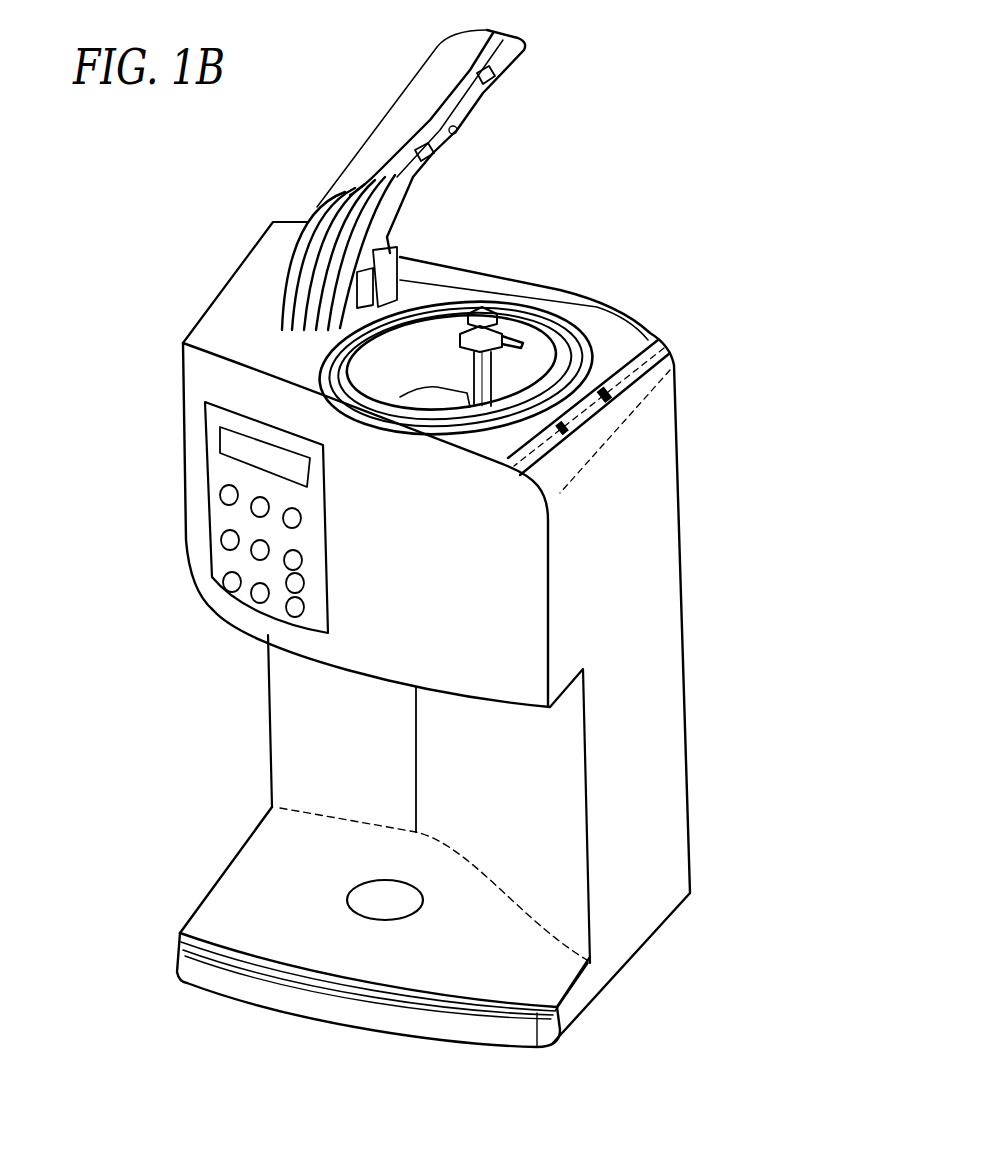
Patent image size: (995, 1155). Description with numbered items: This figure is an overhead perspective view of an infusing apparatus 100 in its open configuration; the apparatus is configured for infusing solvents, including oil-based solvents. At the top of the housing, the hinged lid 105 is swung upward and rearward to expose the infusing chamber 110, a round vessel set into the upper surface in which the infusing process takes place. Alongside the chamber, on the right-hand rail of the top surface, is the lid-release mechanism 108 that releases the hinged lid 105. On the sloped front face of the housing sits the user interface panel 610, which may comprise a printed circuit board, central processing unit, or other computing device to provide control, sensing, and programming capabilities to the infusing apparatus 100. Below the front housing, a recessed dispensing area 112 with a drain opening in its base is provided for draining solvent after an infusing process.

The infusing apparatus 100 is at (668, 988).
The hinged lid 105 is at (497, 47).
The lid-release mechanism 108 is at (595, 347).
The infusing chamber 110 is at (530, 353).
The dispensing area 112 is at (388, 862).
The user interface panel 610 is at (263, 478).